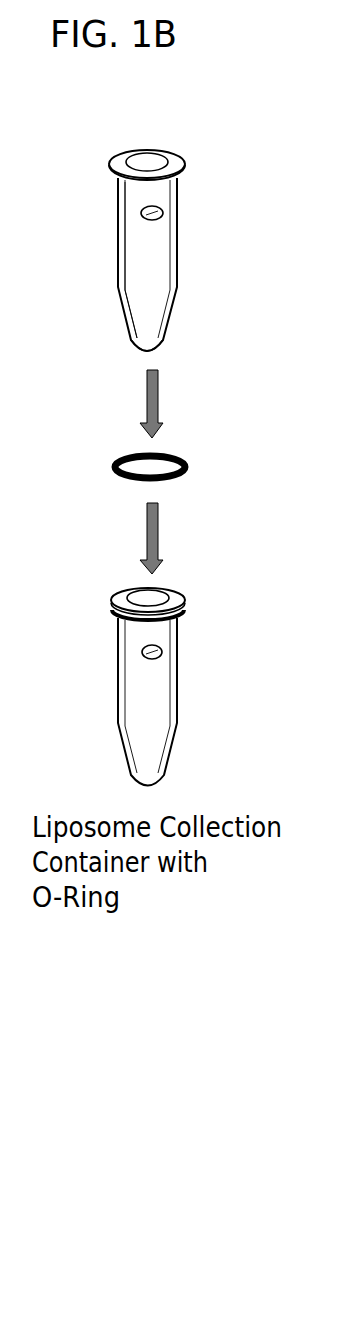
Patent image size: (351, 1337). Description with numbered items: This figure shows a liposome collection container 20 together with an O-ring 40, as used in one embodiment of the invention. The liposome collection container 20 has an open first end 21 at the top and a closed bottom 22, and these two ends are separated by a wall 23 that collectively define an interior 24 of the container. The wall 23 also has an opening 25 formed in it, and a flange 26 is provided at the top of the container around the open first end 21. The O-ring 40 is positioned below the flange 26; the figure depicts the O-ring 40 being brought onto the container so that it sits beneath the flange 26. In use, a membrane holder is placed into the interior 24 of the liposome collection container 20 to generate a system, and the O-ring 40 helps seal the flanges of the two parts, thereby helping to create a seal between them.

The liposome collection container 20 is at (152, 229).
The open first end 21 is at (125, 143).
The closed bottom 22 is at (172, 347).
The wall 23 is at (183, 267).
The interior 24 is at (143, 277).
The opening 25 is at (180, 208).
The flange 26 is at (188, 157).
The O-ring 40 is at (193, 457).